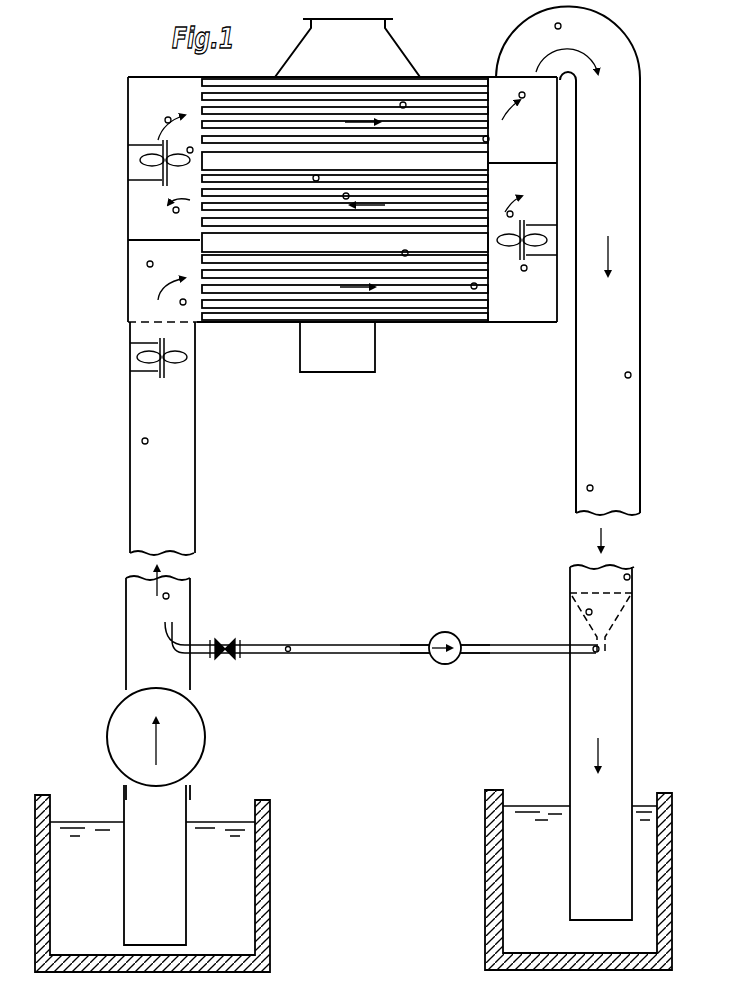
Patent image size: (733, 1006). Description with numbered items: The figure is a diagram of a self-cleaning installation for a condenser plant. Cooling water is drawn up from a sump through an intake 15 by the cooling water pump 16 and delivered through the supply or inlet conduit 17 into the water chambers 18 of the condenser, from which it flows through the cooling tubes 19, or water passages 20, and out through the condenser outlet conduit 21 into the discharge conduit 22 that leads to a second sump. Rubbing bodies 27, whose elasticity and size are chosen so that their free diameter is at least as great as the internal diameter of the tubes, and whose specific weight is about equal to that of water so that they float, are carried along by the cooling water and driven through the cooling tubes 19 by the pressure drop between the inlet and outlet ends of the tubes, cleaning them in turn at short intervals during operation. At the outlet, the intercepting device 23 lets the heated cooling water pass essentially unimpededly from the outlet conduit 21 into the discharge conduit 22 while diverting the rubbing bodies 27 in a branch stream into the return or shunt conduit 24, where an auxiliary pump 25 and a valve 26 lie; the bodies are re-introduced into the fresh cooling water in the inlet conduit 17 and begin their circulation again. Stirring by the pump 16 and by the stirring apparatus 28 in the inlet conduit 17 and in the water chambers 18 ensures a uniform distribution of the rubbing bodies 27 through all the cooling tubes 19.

The inlet pipe 15 is at (181, 878).
The cooling water pump 16 is at (116, 760).
The supply or inlet conduit 17 is at (135, 607).
The water chambers 18 is at (135, 258).
The cooling tubes 19 is at (433, 322).
The water passages 20 is at (283, 318).
The condenser outlet conduit 21 is at (641, 533).
The discharge conduit 22 is at (629, 746).
The intercepting device 23 is at (619, 608).
The return or shunt conduit 24 is at (480, 642).
The auxiliary pump 25 is at (445, 665).
The valve 26 is at (226, 640).
The rubbing bodies 27 is at (148, 441).
The stirring apparatus 28 is at (163, 160).